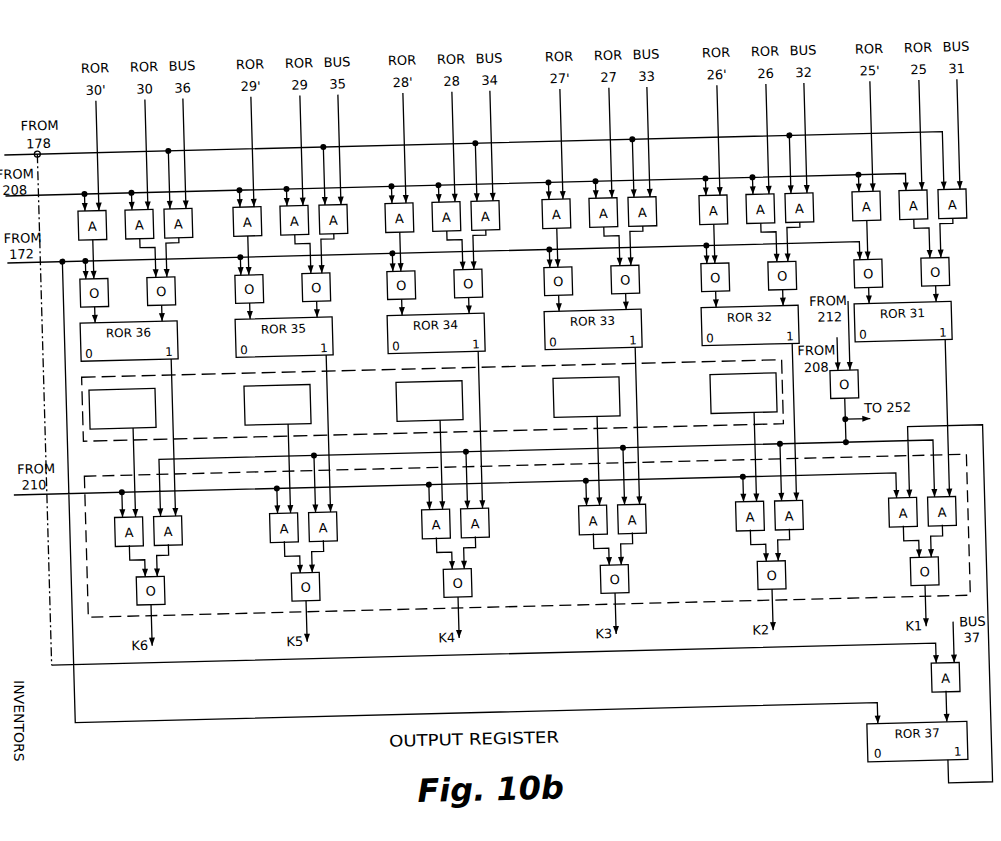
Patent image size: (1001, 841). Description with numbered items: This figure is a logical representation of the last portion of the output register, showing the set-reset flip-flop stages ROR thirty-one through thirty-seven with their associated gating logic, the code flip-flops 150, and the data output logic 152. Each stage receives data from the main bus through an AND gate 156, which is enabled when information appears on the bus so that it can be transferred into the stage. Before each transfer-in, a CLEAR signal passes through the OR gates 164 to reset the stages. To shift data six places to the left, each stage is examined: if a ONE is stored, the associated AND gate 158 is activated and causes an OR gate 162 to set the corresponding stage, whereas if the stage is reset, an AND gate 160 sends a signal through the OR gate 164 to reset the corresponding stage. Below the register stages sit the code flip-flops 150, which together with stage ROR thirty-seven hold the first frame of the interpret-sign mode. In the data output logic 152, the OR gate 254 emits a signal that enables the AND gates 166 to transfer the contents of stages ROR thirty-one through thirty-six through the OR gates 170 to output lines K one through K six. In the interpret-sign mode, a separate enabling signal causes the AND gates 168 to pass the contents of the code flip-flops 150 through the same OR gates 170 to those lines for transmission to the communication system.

The code flip-flops 150 is at (678, 378).
The data output logic 152 is at (676, 628).
The AND gate 156 is at (187, 236).
The AND gate 158 is at (117, 230).
The AND gate 160 is at (72, 236).
The OR gate 162 is at (167, 305).
The OR gate 164 is at (117, 298).
The AND gate 166 is at (167, 543).
The AND gate 168 is at (101, 534).
The OR gate 170 is at (167, 600).
The OR gate 254 is at (847, 404).